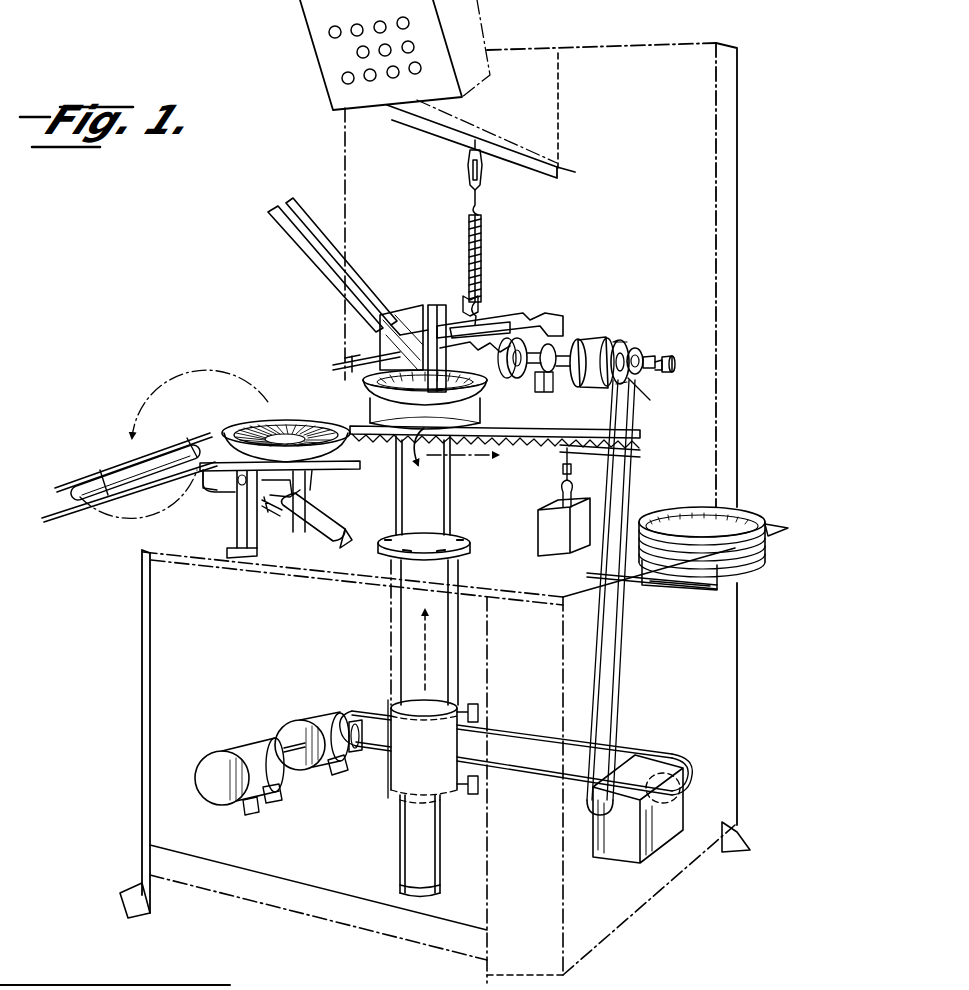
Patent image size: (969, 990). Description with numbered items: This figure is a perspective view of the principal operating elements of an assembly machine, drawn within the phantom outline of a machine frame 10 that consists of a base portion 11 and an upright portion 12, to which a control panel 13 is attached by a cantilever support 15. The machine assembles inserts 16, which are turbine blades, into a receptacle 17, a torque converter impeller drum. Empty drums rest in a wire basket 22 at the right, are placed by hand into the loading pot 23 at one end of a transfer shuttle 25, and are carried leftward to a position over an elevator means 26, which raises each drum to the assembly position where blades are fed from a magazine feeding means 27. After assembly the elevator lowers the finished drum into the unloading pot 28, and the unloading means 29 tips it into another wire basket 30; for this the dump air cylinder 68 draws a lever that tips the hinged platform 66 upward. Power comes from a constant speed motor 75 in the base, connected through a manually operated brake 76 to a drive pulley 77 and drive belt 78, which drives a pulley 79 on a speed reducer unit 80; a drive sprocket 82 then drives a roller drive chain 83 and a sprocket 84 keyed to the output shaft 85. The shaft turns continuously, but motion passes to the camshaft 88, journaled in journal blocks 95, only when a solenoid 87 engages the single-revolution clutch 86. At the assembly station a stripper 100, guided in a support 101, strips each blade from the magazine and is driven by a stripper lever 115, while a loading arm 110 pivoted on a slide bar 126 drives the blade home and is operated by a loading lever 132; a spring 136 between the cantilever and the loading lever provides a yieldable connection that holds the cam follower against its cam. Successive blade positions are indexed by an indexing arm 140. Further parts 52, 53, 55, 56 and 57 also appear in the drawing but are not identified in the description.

The machine frame 10 is at (132, 743).
The base portion 11 is at (555, 918).
The upright portion 12 is at (728, 252).
The control panel 13 is at (335, 97).
The cantilever support 15 is at (528, 56).
The inserts 16 is at (254, 428).
The receptacle 17 is at (270, 412).
The wire rack or basket 22 is at (668, 590).
The loading pot 23 is at (585, 445).
The transfer shuttle 25 is at (610, 452).
The elevator means 26 is at (380, 640).
The magazine feeding means 27 is at (300, 245).
The unloading pot 28 is at (425, 459).
The unloading means 29 is at (228, 508).
The wire basket 30 is at (75, 482).
The column 52 is at (448, 503).
The pipe 53 is at (402, 612).
The lower cylinder 55 is at (405, 853).
The lower fitting 56 is at (480, 790).
The upper fitting 57 is at (480, 712).
The hinged platform 66 is at (318, 468).
The dump air cylinder 68 is at (340, 546).
The constant speed motor 75 is at (232, 745).
The manually operated brake 76 is at (310, 718).
The drive pulley 77 is at (368, 720).
The drive belt 78 is at (650, 752).
The pulley 79 is at (700, 782).
The speed reducer unit 80 is at (650, 850).
The drive sprocket 82 is at (590, 815).
The roller drive chain 83 is at (615, 650).
The sprocket 84 is at (637, 348).
The output shaft 85 is at (665, 372).
The single-revolution clutch 86 is at (605, 337).
The solenoid 87 is at (556, 540).
The camshaft 88 is at (615, 342).
The journal blocks 95 is at (655, 353).
The stripper 100 is at (438, 305).
The support 101 is at (412, 320).
The loading arm 110 is at (466, 390).
The stripper lever 115 is at (530, 318).
The slide bar 126 is at (352, 356).
The loading lever 132 is at (498, 324).
The spring 136 is at (483, 245).
The indexing arm 140 is at (372, 408).